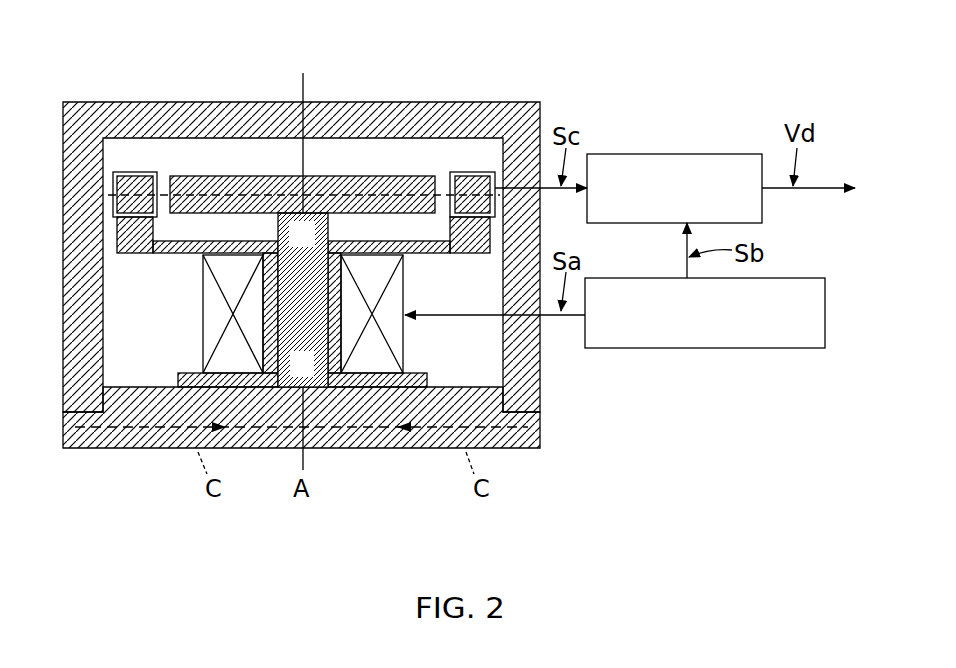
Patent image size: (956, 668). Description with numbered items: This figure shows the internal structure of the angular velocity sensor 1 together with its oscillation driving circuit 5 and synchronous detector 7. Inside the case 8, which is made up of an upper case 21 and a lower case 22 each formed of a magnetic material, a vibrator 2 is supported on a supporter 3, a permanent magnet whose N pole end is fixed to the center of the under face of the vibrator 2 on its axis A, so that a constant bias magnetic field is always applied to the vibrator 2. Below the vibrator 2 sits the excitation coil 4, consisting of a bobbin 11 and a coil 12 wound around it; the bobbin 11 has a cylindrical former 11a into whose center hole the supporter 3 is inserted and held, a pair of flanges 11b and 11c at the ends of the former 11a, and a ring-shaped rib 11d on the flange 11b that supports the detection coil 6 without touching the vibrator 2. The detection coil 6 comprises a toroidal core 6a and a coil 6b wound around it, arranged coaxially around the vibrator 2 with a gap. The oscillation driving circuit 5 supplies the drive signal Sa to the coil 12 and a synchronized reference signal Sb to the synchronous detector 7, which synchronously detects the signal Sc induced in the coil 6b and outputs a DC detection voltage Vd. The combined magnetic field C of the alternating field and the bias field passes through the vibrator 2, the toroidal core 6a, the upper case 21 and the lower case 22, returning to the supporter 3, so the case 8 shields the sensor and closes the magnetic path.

The angular velocity sensor 1 is at (616, 84).
The vibrator 2 is at (342, 176).
The supporter 3 is at (320, 390).
The excitation coil 4 is at (130, 290).
The oscillation driving circuit 5 is at (800, 278).
The detection coil 6 is at (296, 114).
The toroidal core 6a is at (121, 175).
The coil 6b is at (143, 174).
The synchronous detector 7 is at (720, 153).
The case 8 is at (337, 259).
The bobbin 11 is at (248, 302).
The former 11a is at (264, 310).
The flange 11b is at (192, 254).
The flange 11c is at (178, 374).
The rib 11d is at (116, 233).
The coil 12 is at (210, 340).
The upper case 21 is at (492, 101).
The lower case 22 is at (541, 433).